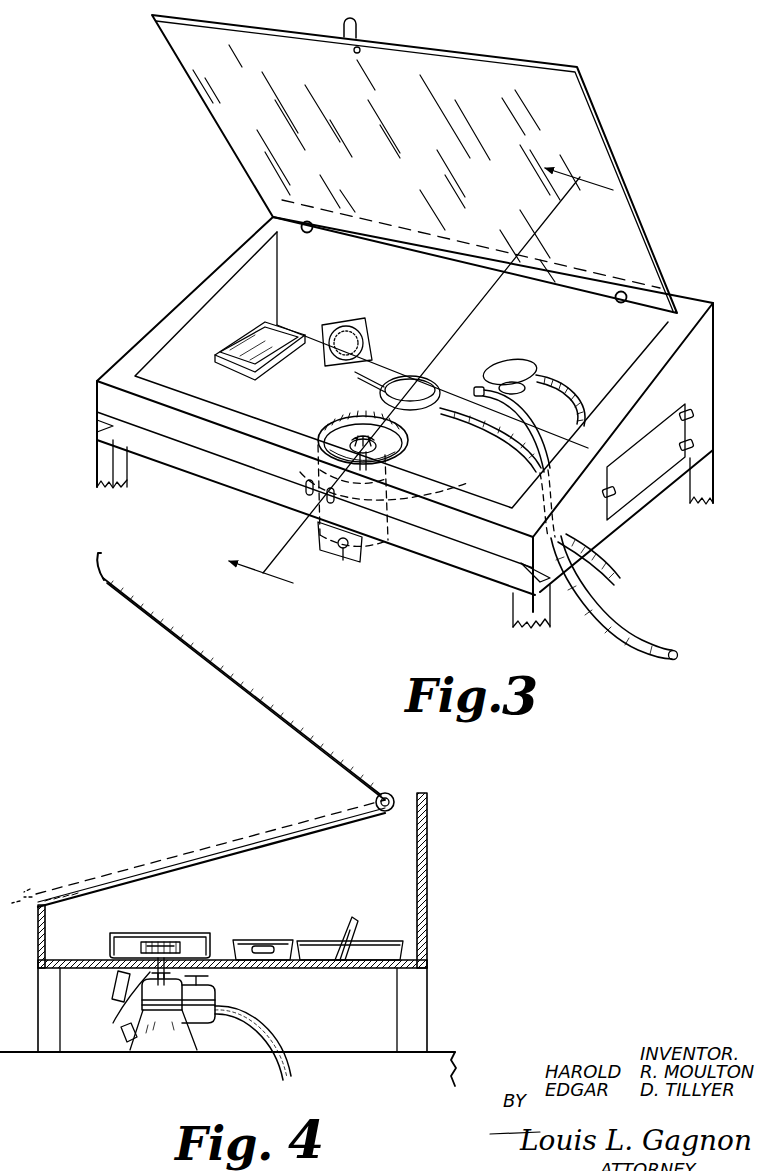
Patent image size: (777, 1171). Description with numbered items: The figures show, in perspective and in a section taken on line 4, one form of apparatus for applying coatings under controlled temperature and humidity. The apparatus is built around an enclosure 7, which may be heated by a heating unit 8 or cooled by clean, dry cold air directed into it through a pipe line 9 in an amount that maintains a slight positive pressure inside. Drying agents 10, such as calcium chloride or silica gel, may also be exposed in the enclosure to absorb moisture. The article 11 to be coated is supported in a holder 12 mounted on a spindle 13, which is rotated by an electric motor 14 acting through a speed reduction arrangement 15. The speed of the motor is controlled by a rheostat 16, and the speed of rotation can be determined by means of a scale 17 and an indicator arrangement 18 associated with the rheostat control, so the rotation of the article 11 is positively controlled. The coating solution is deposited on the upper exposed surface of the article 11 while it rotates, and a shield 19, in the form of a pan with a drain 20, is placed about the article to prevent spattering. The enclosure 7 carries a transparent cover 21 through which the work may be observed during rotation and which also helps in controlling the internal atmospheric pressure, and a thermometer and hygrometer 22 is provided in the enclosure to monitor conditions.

In FIG. 3, the section line 4 is at (423, 384).
In FIG. 3, the enclosure 7 is at (172, 312).
In FIG. 4, the enclosure 7 is at (428, 878).
In FIG. 3, the heating unit 8 is at (430, 385).
In FIG. 4, the heating unit 8 is at (274, 940).
In FIG. 3, the pipe line 9 is at (602, 600).
In FIG. 3, the drying agents 10 is at (255, 345).
In FIG. 4, the drying agents 10 is at (382, 940).
In FIG. 3, the article 11 is at (356, 437).
In FIG. 4, the article 11 is at (165, 942).
In FIG. 3, the holder 12 is at (378, 447).
In FIG. 4, the holder 12 is at (180, 948).
In FIG. 3, the spindle 13 is at (316, 454).
In FIG. 4, the spindle 13 is at (132, 996).
In FIG. 3, the electric motor 14 is at (440, 494).
In FIG. 4, the speed reduction arrangement 15 is at (215, 995).
In FIG. 3, the rheostat 16 is at (343, 555).
In FIG. 4, the rheostat 16 is at (122, 1038).
In FIG. 3, the scale 17 is at (318, 497).
In FIG. 3, the indicator arrangement 18 is at (331, 505).
In FIG. 3, the shield 19 is at (322, 432).
In FIG. 4, the shield 19 is at (110, 946).
In FIG. 4, the drain 20 is at (113, 986).
In FIG. 3, the transparent cover 21 is at (632, 233).
In FIG. 4, the transparent cover 21 is at (312, 744).
In FIG. 3, the thermometer and hygrometer 22 is at (360, 322).
In FIG. 4, the thermometer and hygrometer 22 is at (354, 915).